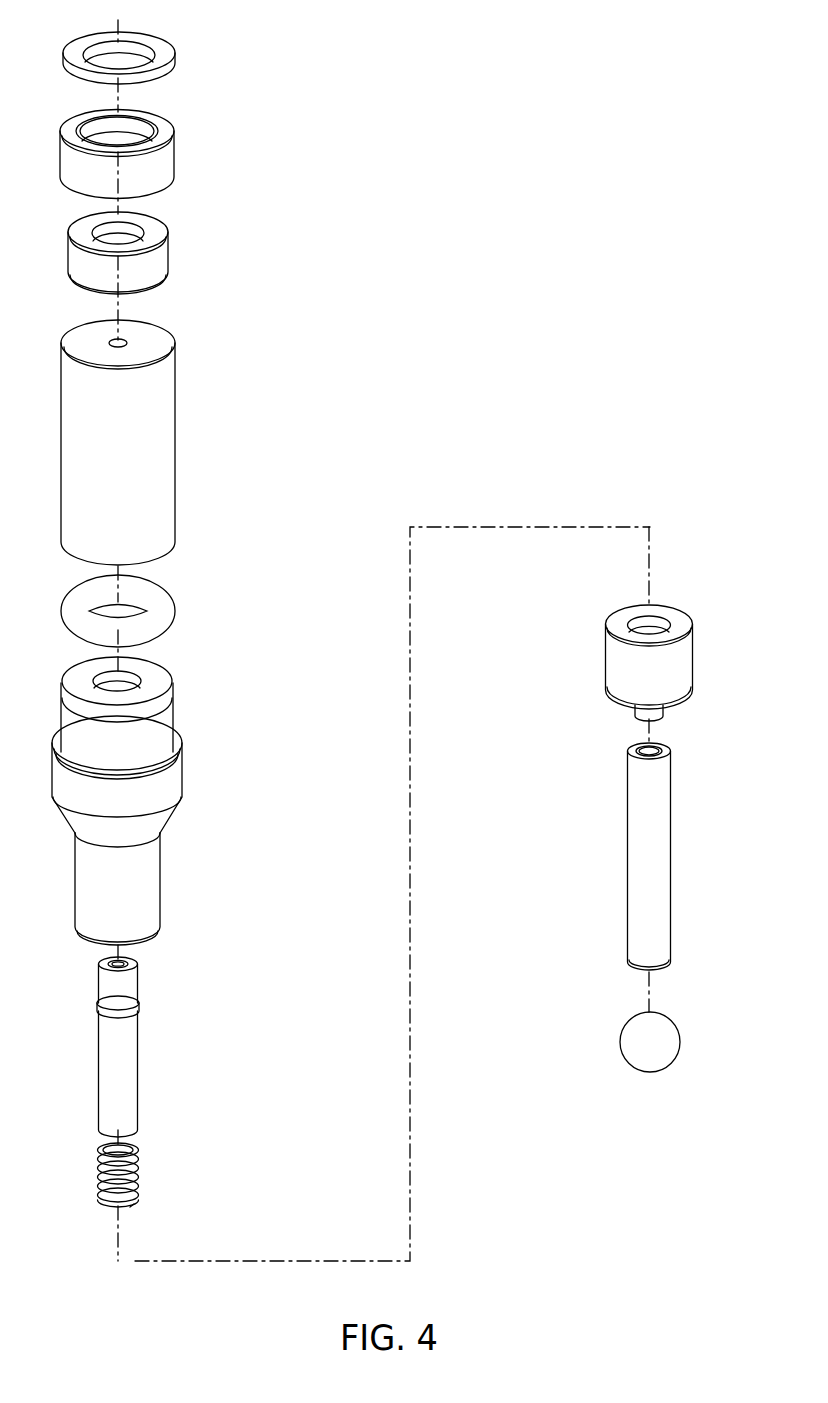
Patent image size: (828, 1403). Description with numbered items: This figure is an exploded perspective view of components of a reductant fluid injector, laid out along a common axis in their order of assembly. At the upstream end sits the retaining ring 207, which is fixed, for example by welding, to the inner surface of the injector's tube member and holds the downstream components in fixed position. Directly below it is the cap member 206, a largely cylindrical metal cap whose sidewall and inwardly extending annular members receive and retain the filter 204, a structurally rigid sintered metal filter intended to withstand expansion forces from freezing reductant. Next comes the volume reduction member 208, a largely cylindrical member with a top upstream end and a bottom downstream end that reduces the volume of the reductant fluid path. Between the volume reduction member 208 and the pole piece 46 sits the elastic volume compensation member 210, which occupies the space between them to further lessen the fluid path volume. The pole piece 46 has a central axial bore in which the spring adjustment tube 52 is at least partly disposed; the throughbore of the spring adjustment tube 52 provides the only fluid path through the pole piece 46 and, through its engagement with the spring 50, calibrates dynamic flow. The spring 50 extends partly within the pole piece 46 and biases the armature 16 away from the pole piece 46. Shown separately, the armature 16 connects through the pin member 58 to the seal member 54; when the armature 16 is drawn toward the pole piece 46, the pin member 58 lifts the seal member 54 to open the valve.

The retaining ring 207 is at (163, 57).
The cap member 206 is at (165, 162).
The filter 204 is at (147, 270).
The volume reduction member 208 is at (143, 403).
The volume compensation member 210 is at (153, 615).
The pole piece 46 is at (137, 747).
The spring adjustment tube 52 is at (122, 1072).
The spring 50 is at (138, 1170).
The armature 16 is at (630, 665).
The pin member 58 is at (643, 815).
The seal member 54 is at (635, 1028).